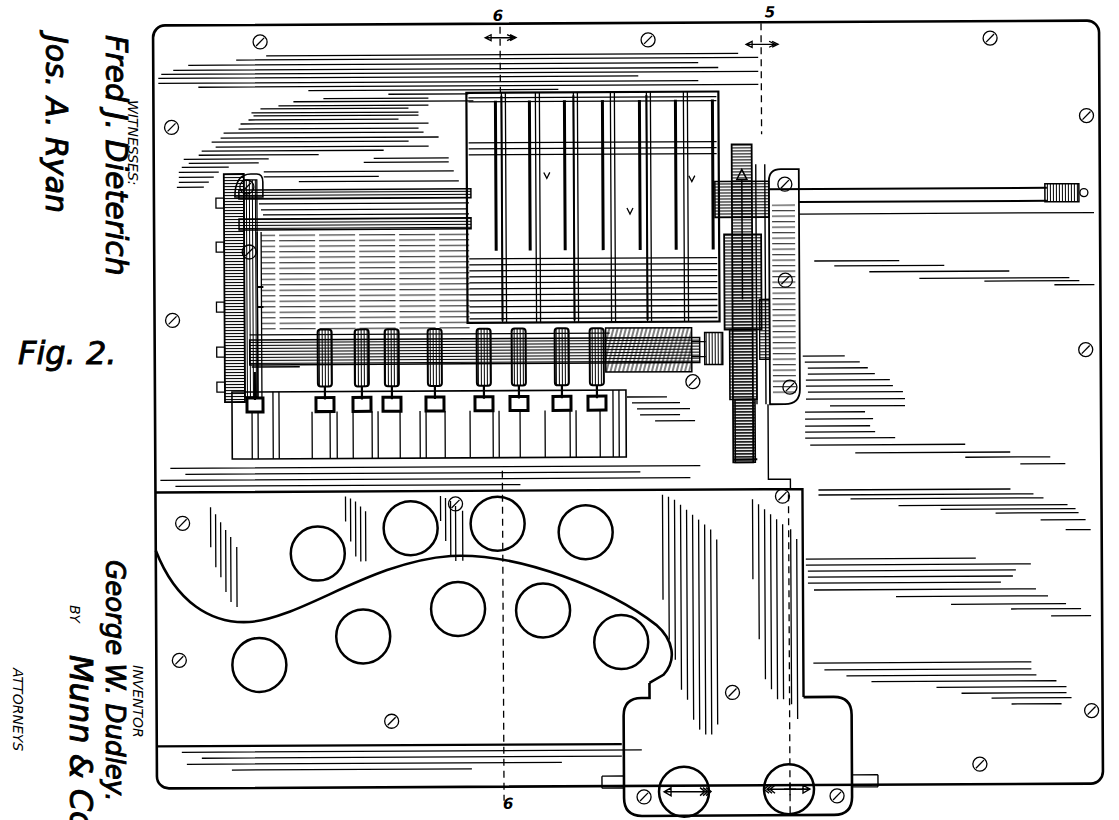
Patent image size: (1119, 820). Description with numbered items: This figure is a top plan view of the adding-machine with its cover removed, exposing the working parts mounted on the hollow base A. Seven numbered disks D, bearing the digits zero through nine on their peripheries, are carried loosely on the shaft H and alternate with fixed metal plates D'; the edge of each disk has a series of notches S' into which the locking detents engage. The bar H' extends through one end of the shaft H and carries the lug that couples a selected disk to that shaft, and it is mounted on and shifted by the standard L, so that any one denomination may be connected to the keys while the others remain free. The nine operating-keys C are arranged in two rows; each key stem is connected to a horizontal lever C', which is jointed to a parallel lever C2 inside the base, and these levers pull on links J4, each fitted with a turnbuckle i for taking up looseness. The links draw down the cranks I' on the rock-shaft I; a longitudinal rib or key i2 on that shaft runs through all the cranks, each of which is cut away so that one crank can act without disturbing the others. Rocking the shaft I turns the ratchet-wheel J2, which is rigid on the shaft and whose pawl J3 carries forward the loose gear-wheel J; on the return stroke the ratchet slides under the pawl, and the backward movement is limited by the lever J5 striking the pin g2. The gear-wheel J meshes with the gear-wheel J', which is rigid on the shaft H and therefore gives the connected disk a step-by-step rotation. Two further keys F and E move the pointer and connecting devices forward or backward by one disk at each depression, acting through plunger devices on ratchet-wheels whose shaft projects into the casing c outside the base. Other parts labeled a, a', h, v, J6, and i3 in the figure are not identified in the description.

The hollow base A is at (628, 405).
The left frame plate a is at (234, 288).
The right frame plate a' is at (795, 326).
The shaft h is at (376, 203).
The shaft H is at (355, 275).
The adjustable bar H' is at (908, 184).
The standard L is at (1060, 206).
The numbered disks D is at (592, 196).
The fixed metal plates D' is at (587, 194).
The notches S' is at (590, 169).
The index mark v is at (617, 199).
The gear-wheel J' is at (743, 289).
The gear-wheel J is at (768, 430).
The ratchet-wheel J2 is at (760, 400).
The pawl J3 is at (765, 310).
The links J4 is at (631, 385).
The lever J5 is at (262, 300).
The lever J6 is at (735, 463).
The pin g2 is at (265, 308).
The rock-shaft I is at (792, 329).
The cranks I' is at (475, 347).
The turnbuckle i is at (586, 402).
The longitudinal rib or key i2 is at (314, 374).
The spring i3 is at (664, 358).
The operating-keys C is at (439, 594).
The horizontal levers C' is at (435, 433).
The horizontal levers C2 is at (581, 448).
The key E is at (786, 772).
The key F is at (683, 771).
The casing c is at (516, 654).